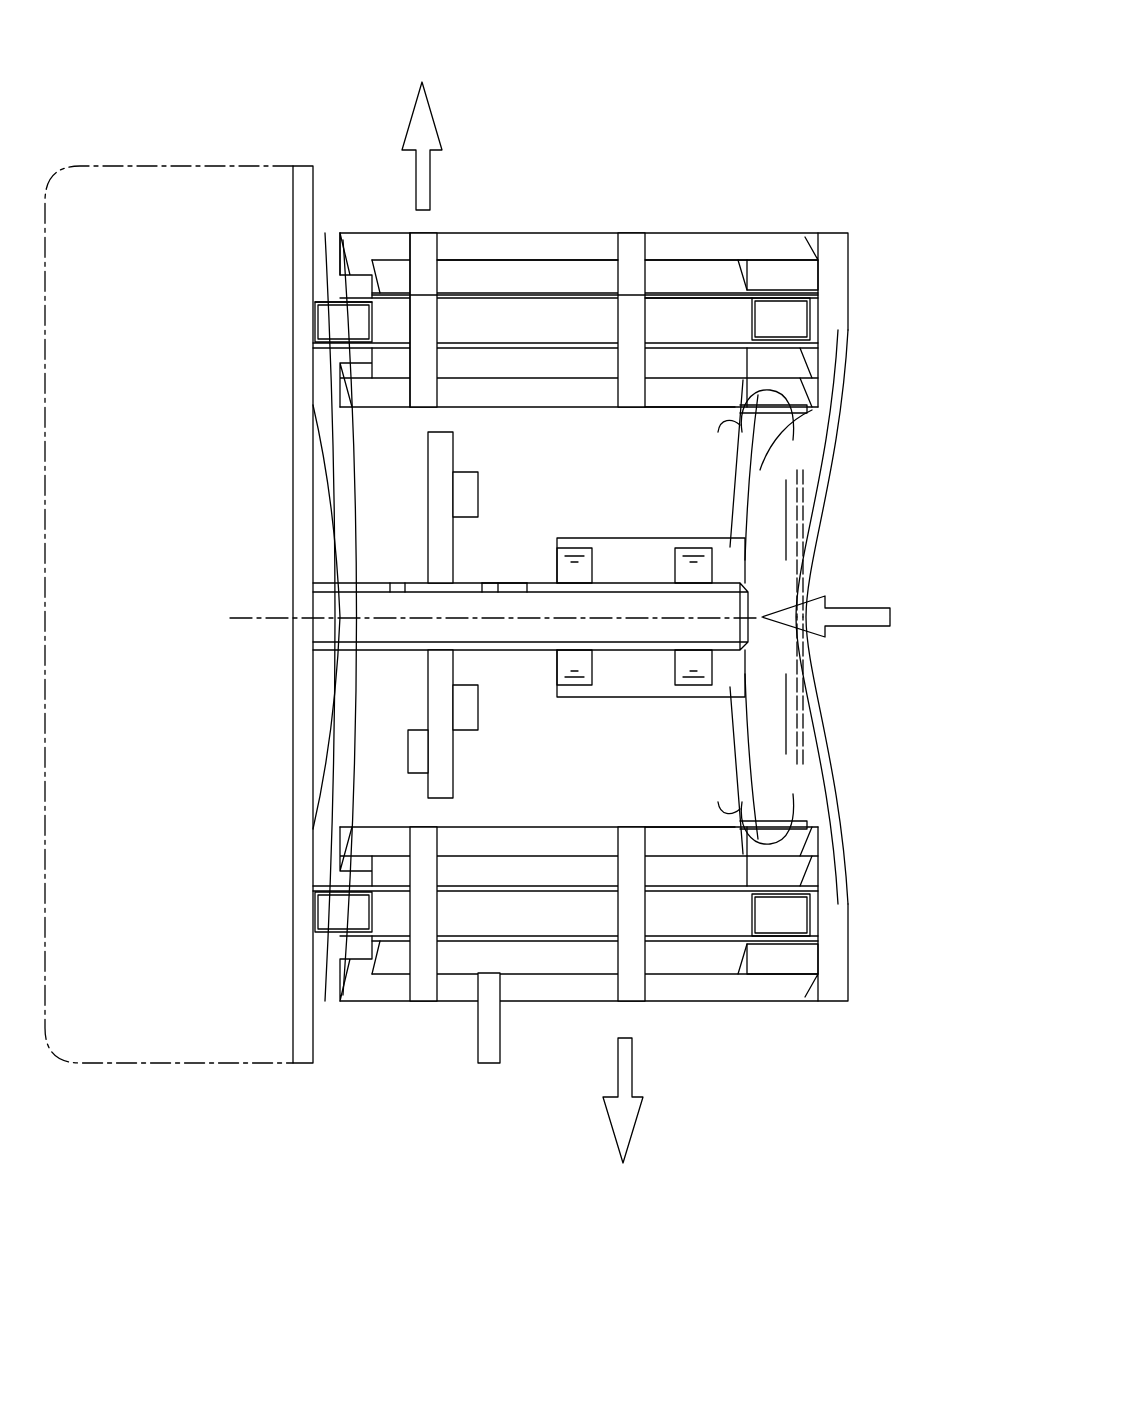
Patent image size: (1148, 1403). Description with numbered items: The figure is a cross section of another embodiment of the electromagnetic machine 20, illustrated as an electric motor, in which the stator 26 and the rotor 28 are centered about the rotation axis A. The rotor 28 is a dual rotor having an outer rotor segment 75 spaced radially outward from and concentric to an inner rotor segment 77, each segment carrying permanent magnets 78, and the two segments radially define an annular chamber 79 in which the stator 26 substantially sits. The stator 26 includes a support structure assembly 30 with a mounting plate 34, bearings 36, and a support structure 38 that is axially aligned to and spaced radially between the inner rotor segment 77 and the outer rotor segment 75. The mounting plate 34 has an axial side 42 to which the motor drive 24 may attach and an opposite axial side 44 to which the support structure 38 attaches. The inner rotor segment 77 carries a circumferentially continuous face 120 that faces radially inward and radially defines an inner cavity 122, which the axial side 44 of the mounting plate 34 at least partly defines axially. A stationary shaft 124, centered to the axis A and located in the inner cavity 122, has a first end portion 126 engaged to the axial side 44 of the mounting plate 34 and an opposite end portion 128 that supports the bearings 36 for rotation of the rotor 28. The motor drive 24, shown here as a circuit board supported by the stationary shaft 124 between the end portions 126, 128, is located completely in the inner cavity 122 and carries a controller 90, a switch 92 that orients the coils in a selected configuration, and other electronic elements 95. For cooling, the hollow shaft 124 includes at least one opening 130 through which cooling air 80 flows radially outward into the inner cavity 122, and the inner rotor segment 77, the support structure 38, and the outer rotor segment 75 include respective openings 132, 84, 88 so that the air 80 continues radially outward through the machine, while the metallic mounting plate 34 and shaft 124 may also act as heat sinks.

The electromagnetic machine 20 is at (926, 102).
The motor drive 24 is at (426, 502).
The stator 26 is at (692, 952).
The rotor 28 is at (676, 228).
The support structure assembly 30 is at (264, 393).
The mounting plate 34 is at (289, 262).
The bearings 36 is at (700, 515).
The support structure 38 is at (528, 290).
The axial side 42 is at (312, 330).
The opposite axial side 44 is at (340, 483).
The outer rotor segment 75 is at (568, 233).
The inner rotor segment 77 is at (688, 828).
The permanent magnets 78 is at (706, 260).
The annular chamber 79 is at (342, 290).
The cooling air 80 is at (416, 170).
The cooling flow opening 84 is at (647, 320).
The openings 88 is at (431, 233).
The controller 90 is at (478, 485).
The switch 92 is at (408, 748).
The other electronic elements 95 is at (478, 705).
The circumferentially continuous face 120 is at (718, 430).
The inner cavity 122 is at (637, 505).
The stationary shaft 124 is at (524, 656).
The first end portion 126 is at (340, 667).
The opposite end portion 128 is at (748, 580).
The opening 130 is at (528, 582).
The openings 132 is at (625, 410).
The rotation axis A is at (235, 620).